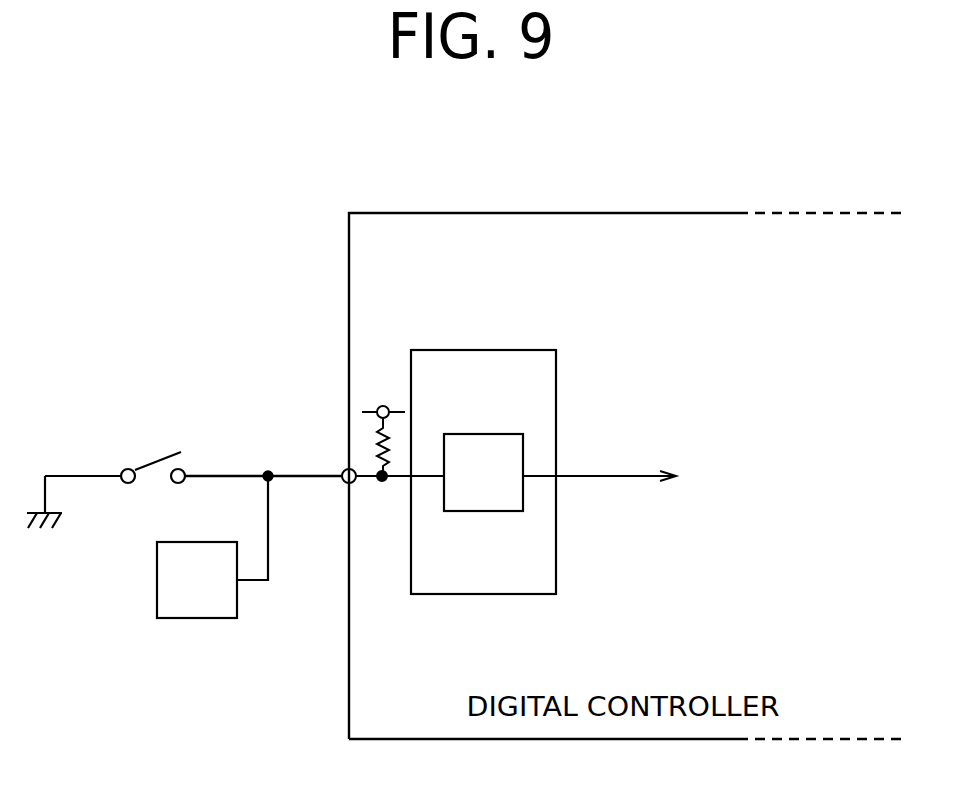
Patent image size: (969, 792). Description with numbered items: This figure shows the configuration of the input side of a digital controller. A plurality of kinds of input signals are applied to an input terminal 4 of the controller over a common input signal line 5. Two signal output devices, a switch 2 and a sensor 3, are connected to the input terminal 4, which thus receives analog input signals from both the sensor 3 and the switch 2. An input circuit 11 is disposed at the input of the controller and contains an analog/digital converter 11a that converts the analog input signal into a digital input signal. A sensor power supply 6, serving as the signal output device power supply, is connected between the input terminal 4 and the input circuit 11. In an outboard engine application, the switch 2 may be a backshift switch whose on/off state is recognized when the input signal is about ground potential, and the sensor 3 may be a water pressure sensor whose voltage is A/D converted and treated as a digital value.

The switch 2 is at (143, 459).
The sensor 3 is at (193, 619).
The input terminal 4 is at (345, 468).
The input signal line 5 is at (294, 475).
The sensor power supply 6 is at (383, 406).
The input circuit 11 is at (456, 350).
The A/D converter 11a is at (482, 512).